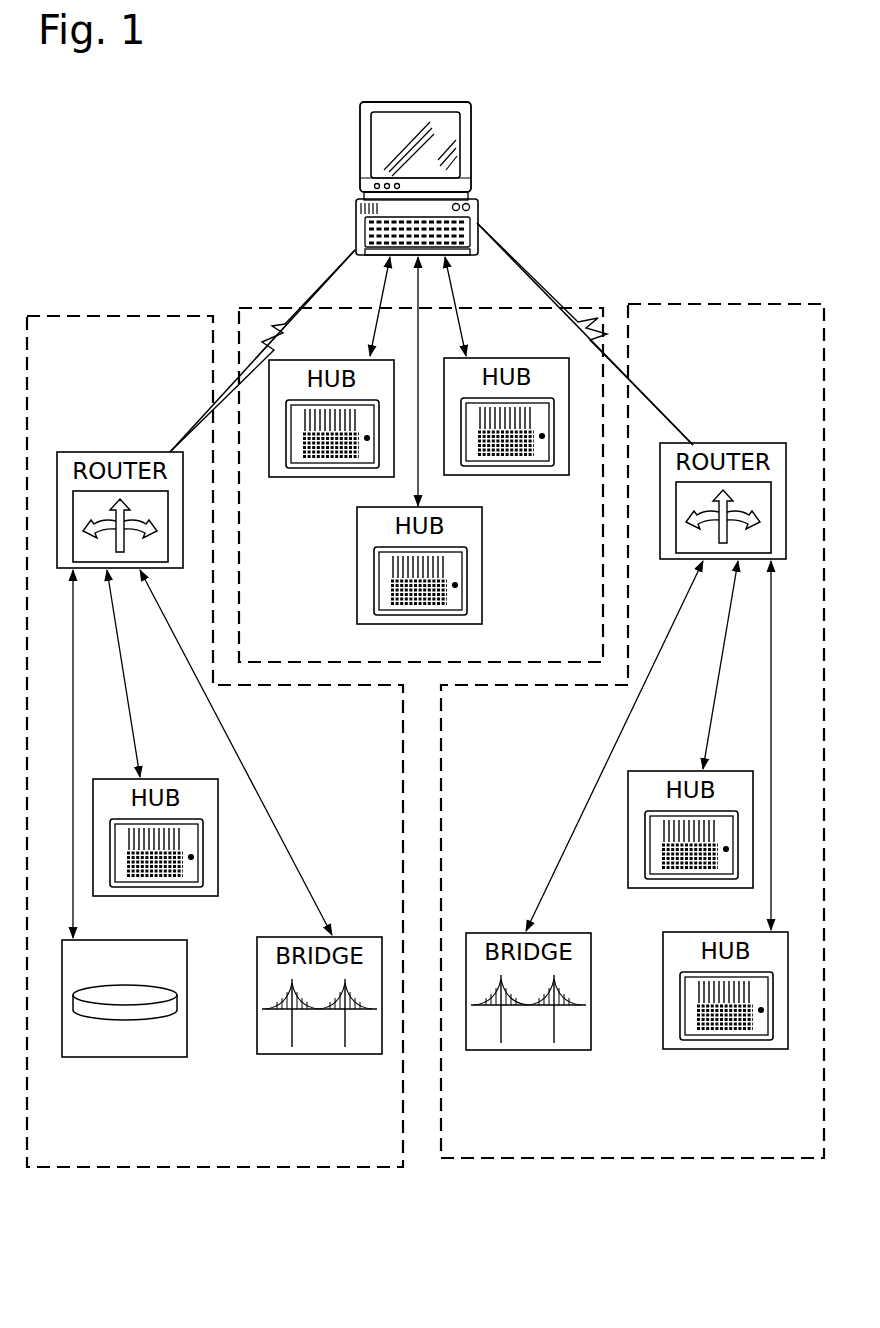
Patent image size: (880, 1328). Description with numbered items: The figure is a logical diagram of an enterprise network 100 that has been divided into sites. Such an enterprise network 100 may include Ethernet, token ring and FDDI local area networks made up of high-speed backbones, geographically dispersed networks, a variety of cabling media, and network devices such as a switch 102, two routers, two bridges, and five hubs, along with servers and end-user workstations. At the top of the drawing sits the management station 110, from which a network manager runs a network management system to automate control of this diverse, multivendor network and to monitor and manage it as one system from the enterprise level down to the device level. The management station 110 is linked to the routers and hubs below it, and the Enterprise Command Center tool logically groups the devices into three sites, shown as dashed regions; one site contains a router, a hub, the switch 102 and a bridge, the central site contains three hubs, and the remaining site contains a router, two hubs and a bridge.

The enterprise network 100 is at (612, 68).
The switch 102 is at (72, 1057).
The management station 110 is at (420, 102).